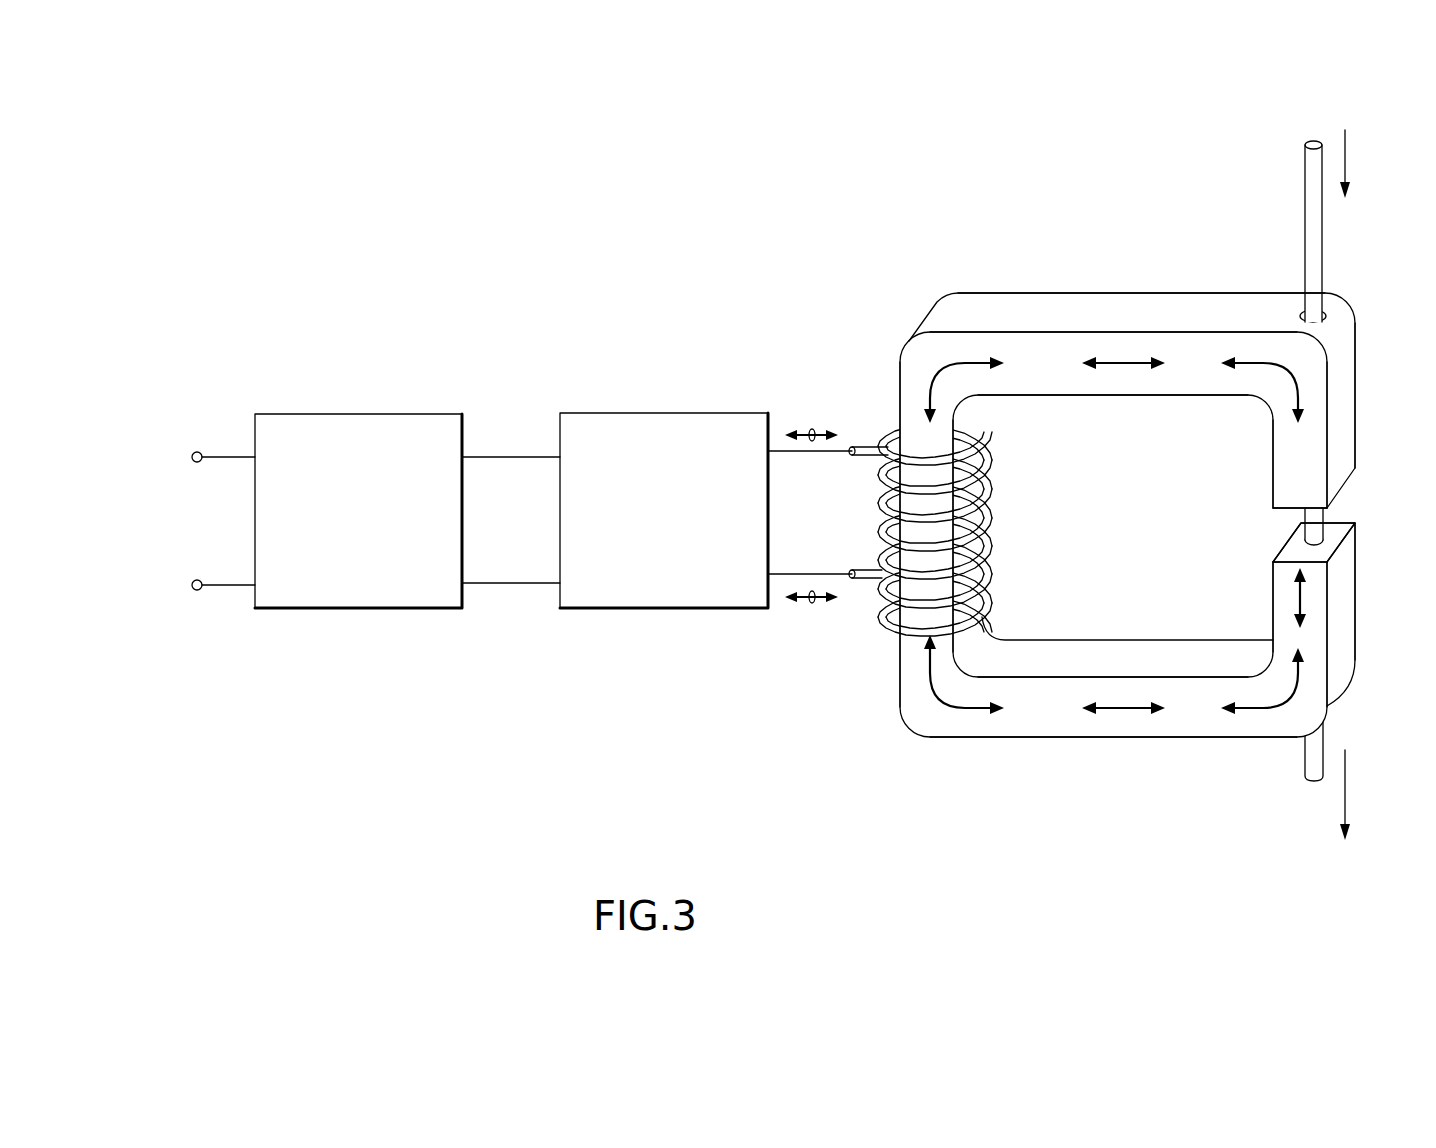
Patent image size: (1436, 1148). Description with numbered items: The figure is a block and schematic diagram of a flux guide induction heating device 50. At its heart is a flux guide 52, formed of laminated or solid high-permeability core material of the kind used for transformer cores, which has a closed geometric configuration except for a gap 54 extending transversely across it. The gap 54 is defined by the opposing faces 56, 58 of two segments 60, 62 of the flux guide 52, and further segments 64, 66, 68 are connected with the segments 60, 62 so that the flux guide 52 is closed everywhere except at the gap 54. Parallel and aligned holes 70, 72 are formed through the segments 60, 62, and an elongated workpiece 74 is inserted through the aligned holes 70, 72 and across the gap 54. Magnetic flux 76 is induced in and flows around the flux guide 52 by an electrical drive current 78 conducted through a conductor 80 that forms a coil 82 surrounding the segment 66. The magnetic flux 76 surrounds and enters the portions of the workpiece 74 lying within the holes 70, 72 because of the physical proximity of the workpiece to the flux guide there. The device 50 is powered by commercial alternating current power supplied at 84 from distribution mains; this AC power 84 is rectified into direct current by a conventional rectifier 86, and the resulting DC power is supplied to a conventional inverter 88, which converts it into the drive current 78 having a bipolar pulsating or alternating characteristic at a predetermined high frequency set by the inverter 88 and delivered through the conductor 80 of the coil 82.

The flux guide induction heating device 50 is at (888, 760).
The flux guide 52 is at (1084, 746).
The gap 54 is at (1363, 463).
The opposing face 56 is at (1277, 508).
The opposing face 58 is at (1288, 554).
The segment 60 is at (1352, 412).
The segment 62 is at (1348, 587).
The segment 64 is at (1138, 312).
The segment 66 is at (905, 633).
The segment 68 is at (1035, 722).
The hole 70 is at (1330, 320).
The hole 72 is at (1328, 541).
The workpiece 74 is at (1318, 246).
The magnetic flux 76 is at (1122, 366).
The electrical drive current 78 is at (822, 650).
The conductor 80 is at (835, 454).
The coil 82 is at (1013, 420).
The AC power 84 is at (184, 447).
The rectifier 86 is at (312, 592).
The inverter 88 is at (605, 590).